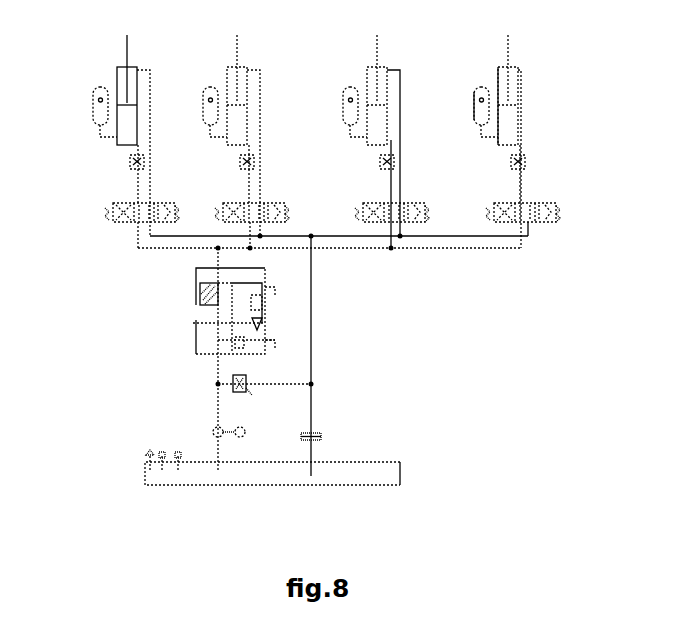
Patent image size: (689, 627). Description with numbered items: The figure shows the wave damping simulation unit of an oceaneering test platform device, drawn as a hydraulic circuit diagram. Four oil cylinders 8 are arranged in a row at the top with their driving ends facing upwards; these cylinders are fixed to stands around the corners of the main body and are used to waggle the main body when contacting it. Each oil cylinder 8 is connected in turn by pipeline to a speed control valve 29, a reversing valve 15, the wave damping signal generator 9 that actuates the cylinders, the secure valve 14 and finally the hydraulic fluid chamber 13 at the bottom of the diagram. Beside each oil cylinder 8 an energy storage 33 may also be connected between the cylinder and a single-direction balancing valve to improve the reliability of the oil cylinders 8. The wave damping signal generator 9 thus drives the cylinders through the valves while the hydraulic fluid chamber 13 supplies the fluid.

The oil cylinder 8 is at (117, 72).
The accumulator 33 is at (96, 116).
The speed control valve 29 is at (128, 170).
The reversing valve 15 is at (122, 222).
The wave damping signal generator 9 is at (195, 290).
The secure valve 14 is at (233, 388).
The hydraulic fluid chamber 13 is at (340, 470).